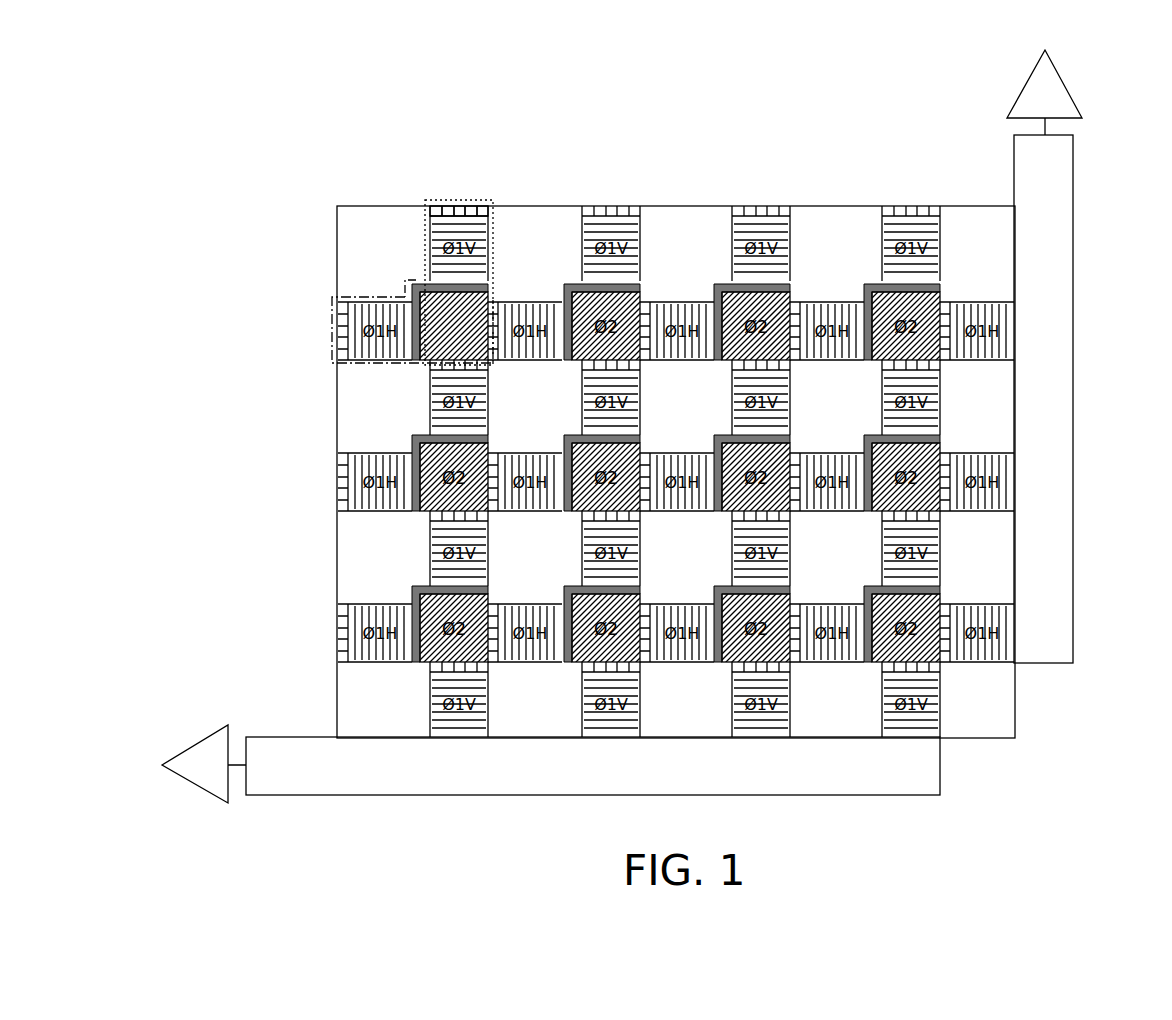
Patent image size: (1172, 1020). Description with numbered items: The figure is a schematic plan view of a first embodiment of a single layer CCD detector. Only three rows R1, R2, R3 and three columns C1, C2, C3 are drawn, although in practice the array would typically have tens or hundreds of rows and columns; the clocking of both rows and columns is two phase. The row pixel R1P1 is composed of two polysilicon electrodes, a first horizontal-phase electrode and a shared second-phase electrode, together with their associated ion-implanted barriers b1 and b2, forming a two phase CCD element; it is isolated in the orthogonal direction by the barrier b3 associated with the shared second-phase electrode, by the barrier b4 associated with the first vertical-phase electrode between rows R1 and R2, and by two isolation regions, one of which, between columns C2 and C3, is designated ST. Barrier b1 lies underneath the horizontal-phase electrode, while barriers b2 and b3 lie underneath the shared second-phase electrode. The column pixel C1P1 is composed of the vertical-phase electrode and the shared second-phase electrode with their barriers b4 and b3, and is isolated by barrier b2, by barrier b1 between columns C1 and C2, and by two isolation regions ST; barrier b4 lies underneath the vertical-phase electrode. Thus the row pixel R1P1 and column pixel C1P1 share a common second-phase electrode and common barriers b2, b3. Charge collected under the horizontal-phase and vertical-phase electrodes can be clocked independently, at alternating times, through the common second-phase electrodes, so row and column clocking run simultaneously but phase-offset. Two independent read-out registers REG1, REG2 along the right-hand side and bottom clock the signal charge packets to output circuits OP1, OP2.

The output circuit OP1 is at (1056, 96).
The output circuit OP2 is at (203, 757).
The read-out register REG1 is at (1058, 227).
The read-out register REG2 is at (924, 771).
The row R1 is at (698, 331).
The row R2 is at (1012, 490).
The row R3 is at (1012, 644).
The column C1 is at (458, 494).
The column C2 is at (607, 731).
The column C3 is at (757, 731).
The isolation region ST is at (685, 226).
The ion-implanted barrier b1 is at (336, 317).
The ion-implanted barrier b2 is at (413, 330).
The ion-implanted barrier b3 is at (443, 282).
The ion-implanted barrier b4 is at (445, 205).
The column pixel C1P1 is at (484, 200).
The row pixel R1P1 is at (332, 347).